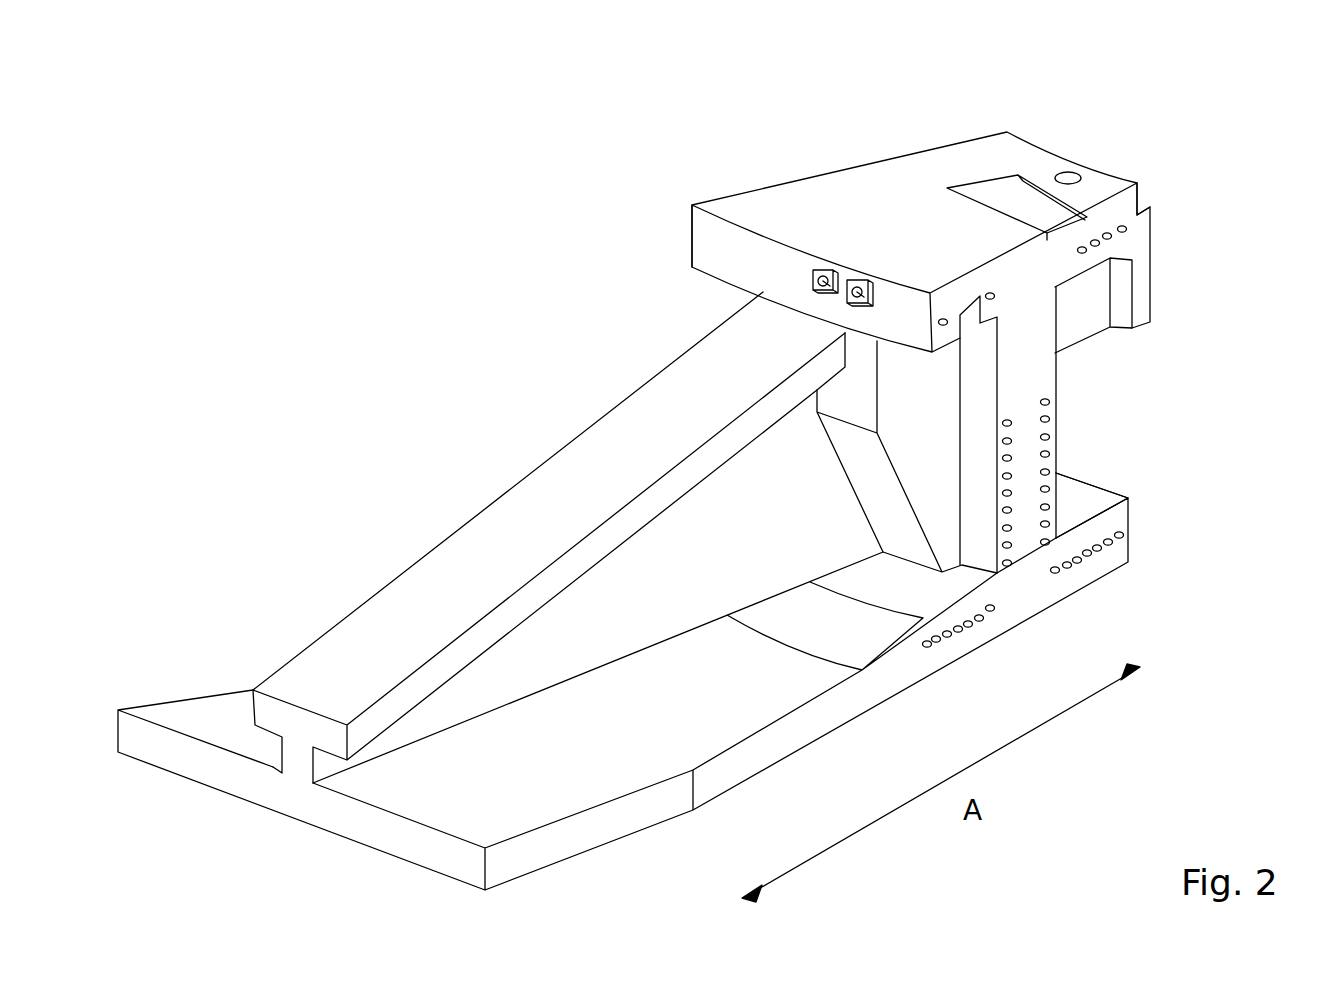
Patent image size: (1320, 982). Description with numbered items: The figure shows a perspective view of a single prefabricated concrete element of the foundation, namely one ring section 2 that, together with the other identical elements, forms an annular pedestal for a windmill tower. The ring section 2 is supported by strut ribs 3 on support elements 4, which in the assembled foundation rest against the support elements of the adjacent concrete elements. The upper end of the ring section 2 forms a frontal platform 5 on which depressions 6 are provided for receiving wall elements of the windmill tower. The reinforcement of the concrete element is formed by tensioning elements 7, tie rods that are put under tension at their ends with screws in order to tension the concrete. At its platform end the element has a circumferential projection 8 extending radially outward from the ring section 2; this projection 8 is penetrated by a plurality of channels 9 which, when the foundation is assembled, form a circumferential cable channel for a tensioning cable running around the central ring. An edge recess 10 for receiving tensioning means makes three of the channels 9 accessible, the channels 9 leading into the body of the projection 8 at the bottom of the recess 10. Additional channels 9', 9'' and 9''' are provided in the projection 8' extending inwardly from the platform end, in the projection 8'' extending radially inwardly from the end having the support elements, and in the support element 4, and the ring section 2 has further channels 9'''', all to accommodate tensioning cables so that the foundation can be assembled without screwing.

The ring section 2 is at (1025, 312).
The strut ribs 3 is at (615, 625).
The support elements 4 is at (698, 702).
The frontal platform 5 is at (862, 198).
The depressions 6 is at (1012, 205).
The tensioning elements 7 is at (850, 293).
The circumferential projection 8 is at (644, 222).
The projection 8' is at (1073, 280).
The projection 8'' is at (1151, 522).
The channels 9 is at (952, 266).
The additional channels 9' is at (1148, 243).
The additional channels 9'' is at (1106, 587).
The additional channels 9''' is at (976, 661).
The further channels 9'''' is at (1110, 543).
The edge recess 10 is at (968, 330).